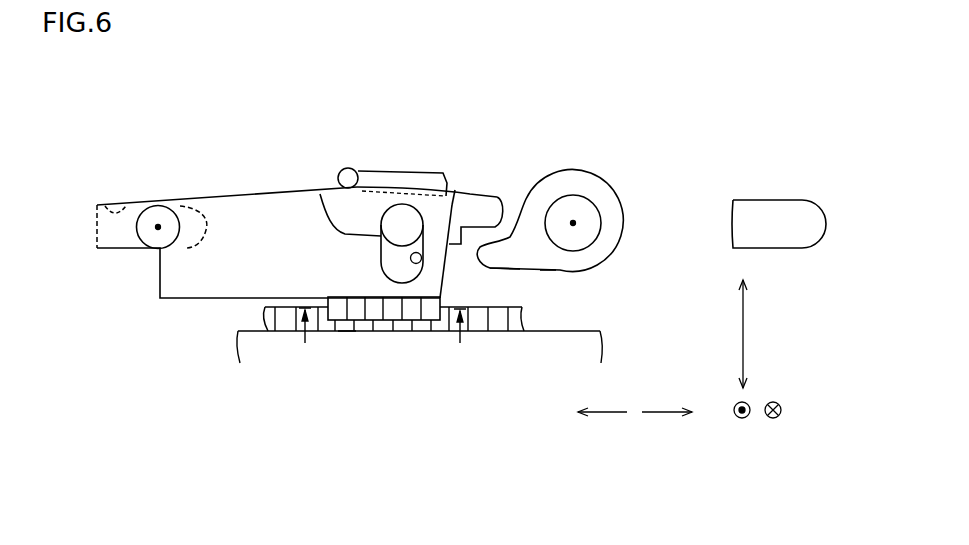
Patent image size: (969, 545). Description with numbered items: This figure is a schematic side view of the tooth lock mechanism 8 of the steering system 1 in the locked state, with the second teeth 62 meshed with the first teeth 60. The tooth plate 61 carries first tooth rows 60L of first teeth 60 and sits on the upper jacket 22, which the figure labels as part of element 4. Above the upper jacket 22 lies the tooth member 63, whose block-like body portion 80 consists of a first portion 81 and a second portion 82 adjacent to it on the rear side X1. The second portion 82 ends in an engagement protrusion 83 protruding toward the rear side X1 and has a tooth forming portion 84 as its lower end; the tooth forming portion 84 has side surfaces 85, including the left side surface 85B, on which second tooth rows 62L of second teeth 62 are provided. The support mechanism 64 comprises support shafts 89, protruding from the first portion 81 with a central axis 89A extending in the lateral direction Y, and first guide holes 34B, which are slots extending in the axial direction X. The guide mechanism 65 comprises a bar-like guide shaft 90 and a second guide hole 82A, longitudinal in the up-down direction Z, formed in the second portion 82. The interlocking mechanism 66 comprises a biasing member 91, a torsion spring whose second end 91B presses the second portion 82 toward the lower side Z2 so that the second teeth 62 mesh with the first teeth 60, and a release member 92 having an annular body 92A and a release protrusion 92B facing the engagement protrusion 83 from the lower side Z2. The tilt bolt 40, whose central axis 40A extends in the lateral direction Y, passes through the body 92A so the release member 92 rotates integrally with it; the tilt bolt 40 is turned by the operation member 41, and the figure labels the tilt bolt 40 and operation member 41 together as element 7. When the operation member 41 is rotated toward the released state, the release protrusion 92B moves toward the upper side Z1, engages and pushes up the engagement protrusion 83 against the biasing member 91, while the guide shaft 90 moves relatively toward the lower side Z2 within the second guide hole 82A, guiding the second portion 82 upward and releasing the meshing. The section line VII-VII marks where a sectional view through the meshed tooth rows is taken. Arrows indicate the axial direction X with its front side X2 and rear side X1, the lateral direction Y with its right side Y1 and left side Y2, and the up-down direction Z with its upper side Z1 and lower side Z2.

The steering system 1 is at (531, 118).
The housing 4 is at (574, 331).
The guide protrusions 7 is at (627, 194).
The tooth lock mechanism 8 is at (559, 150).
The upper jacket 22 is at (440, 343).
The first guide holes 34B is at (113, 204).
The tilt bolt 40 is at (602, 224).
The central axis 40A is at (573, 223).
The operation member 41 is at (769, 206).
The first teeth 60 is at (497, 333).
The first tooth rows 60L is at (524, 320).
The tooth plate 61 is at (262, 313).
The second teeth 62 is at (392, 321).
The second tooth rows 62L is at (350, 320).
The tooth member 63 is at (290, 192).
The support mechanism 64 is at (93, 130).
The guide mechanism 65 is at (501, 116).
The interlocking mechanism 66 is at (382, 136).
The body portion 80 is at (247, 197).
The first portion 81 is at (170, 298).
The second portion 82 is at (322, 193).
The second guide hole 82A is at (455, 190).
The engagement protrusion 83 is at (480, 208).
The tooth forming portion 84 is at (443, 299).
The side surfaces 85 is at (345, 283).
The left-side side surface 85B is at (337, 302).
The support shafts 89 is at (188, 205).
The central axis 89A is at (157, 228).
The guide shaft 90 is at (403, 220).
The biasing member 91 is at (388, 172).
The second end 91B is at (349, 168).
The release member 92 is at (621, 196).
The body 92A is at (613, 214).
The release protrusion 92B is at (492, 263).
The line VII- VII is at (381, 341).
The axial direction X is at (686, 459).
The rear side X1 is at (661, 413).
The front side X2 is at (608, 413).
The lateral direction Y is at (713, 463).
The right side Y1 is at (774, 419).
The left side Y2 is at (741, 419).
The up-down direction Z is at (797, 295).
The upper side Z1 is at (746, 310).
The lower side Z2 is at (746, 353).